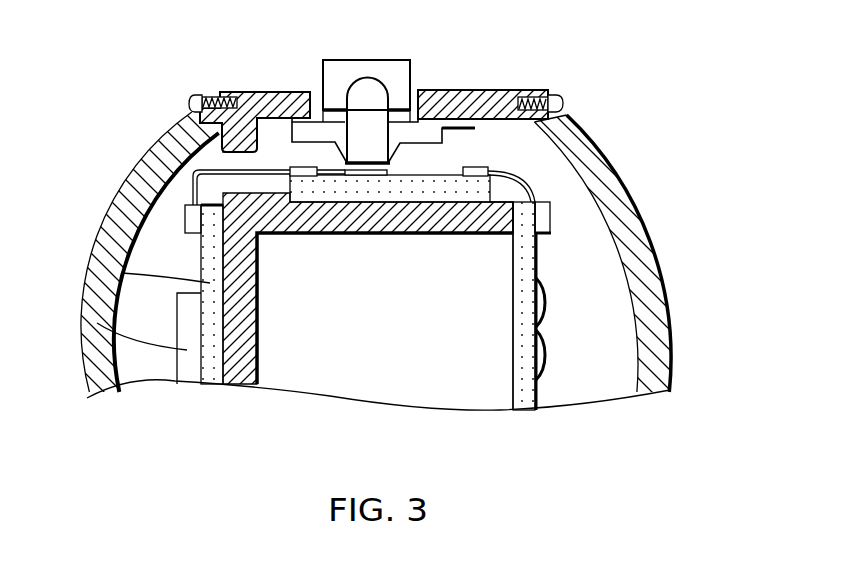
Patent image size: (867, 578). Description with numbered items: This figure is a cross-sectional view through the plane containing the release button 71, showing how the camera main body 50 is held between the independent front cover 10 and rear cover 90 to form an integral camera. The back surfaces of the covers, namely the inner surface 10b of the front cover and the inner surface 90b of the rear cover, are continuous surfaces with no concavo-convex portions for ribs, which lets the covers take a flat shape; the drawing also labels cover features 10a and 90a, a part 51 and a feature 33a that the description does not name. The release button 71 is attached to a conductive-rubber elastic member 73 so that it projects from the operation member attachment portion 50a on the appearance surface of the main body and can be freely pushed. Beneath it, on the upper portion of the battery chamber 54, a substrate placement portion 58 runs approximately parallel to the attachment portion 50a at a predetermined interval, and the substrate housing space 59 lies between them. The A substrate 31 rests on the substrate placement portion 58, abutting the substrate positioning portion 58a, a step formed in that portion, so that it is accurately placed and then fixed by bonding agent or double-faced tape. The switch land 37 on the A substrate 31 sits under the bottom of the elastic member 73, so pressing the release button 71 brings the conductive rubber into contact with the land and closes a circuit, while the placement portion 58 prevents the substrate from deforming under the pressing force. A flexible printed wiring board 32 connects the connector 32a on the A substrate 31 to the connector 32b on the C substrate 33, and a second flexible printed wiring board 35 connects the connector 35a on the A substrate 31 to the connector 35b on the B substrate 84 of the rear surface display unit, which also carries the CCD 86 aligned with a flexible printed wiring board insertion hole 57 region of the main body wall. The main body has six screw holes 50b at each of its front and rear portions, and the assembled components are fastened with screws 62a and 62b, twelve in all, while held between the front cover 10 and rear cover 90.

The front cover 10 is at (658, 211).
The outer surface of housing 10a is at (692, 315).
The inner surface of front cover 10b is at (637, 353).
The A substrate 31 is at (360, 192).
The flexible printed wiring board for connection 32 is at (553, 173).
The connector 32a is at (474, 204).
The connector 32b is at (553, 232).
The C substrate 33 is at (523, 260).
The projections of cushion member 33a is at (543, 297).
The flexible printed wiring board for connection 35 is at (188, 182).
The connector 35a is at (323, 203).
The connector 35b is at (191, 237).
The switch land 37 is at (388, 172).
The camera main body 50 is at (237, 83).
The operation member attachment portion 50a is at (482, 90).
The screw holes 50b is at (492, 122).
The fixing member 51 is at (317, 100).
The battery chamber 54 is at (347, 375).
The flexible printed wiring board insertion hole 57 is at (227, 163).
The substrate placement portion 58 is at (515, 187).
The substrate positioning portion 58a is at (300, 178).
The substrate housing space 59 is at (452, 133).
The screw 62a is at (193, 100).
The screw 62b is at (562, 96).
The release button 71 is at (392, 68).
The elastic member 73 is at (366, 93).
The B substrate 84 is at (97, 268).
The CCD 86 is at (97, 323).
The rear cover 90 is at (134, 149).
The outer surface of cover 90a is at (103, 216).
The inner surface of rear cover 90b is at (140, 230).